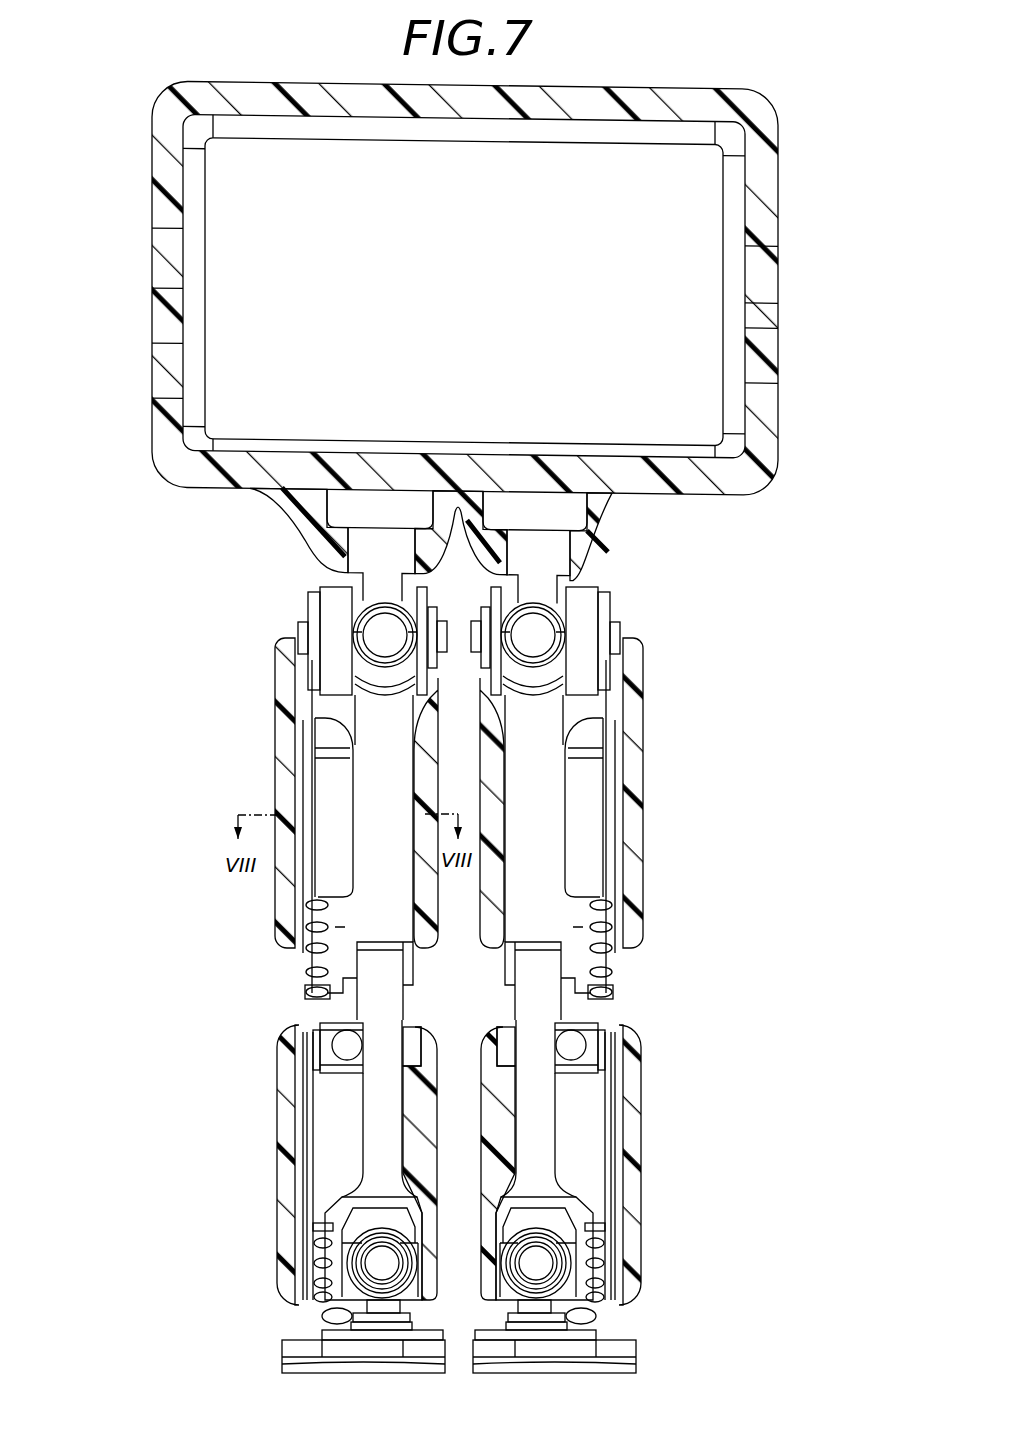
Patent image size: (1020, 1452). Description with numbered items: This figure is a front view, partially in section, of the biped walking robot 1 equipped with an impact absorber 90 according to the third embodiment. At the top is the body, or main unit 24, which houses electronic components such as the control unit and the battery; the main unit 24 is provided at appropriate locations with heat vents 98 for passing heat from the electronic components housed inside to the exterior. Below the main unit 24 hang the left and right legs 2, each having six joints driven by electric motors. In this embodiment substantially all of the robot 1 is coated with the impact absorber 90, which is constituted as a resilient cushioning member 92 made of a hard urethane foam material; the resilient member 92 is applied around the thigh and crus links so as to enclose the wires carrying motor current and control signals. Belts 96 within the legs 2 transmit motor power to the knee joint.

The biped walking robot 1 is at (632, 598).
The leg 2 is at (638, 995).
The body (main unit) 24 is at (573, 297).
The impact absorber 90 is at (273, 1033).
The resilient (cushioning) member 92 is at (765, 457).
The belts 96 is at (305, 880).
The heat vents 98 is at (767, 340).